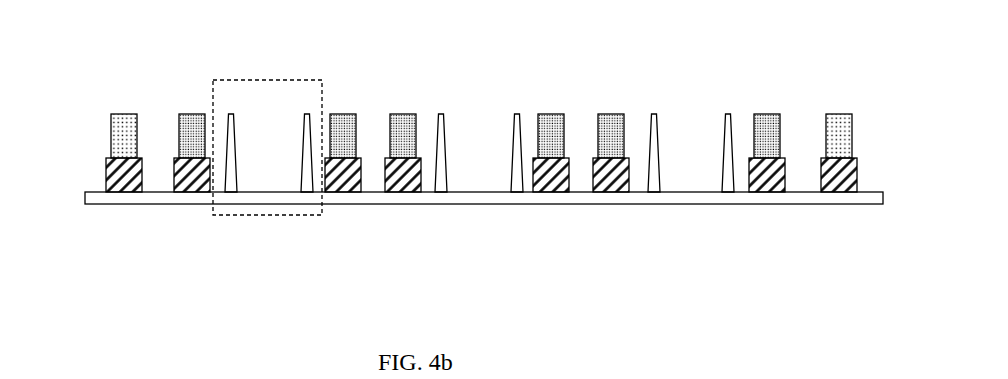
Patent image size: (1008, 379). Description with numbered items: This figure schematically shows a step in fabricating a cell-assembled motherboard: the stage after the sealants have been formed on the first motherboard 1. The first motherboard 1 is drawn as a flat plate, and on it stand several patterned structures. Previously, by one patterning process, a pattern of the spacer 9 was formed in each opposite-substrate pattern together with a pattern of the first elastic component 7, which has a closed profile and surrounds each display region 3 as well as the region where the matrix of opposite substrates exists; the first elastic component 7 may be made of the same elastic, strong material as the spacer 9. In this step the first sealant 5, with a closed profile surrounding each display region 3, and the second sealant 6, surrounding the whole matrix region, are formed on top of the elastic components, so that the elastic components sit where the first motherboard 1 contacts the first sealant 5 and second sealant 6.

The first motherboard 1 is at (484, 221).
The display region 3 is at (267, 172).
The first sealant 5 is at (375, 109).
The second sealant 6 is at (98, 109).
The first elastic component 7 is at (803, 206).
The spacer 9 is at (544, 124).